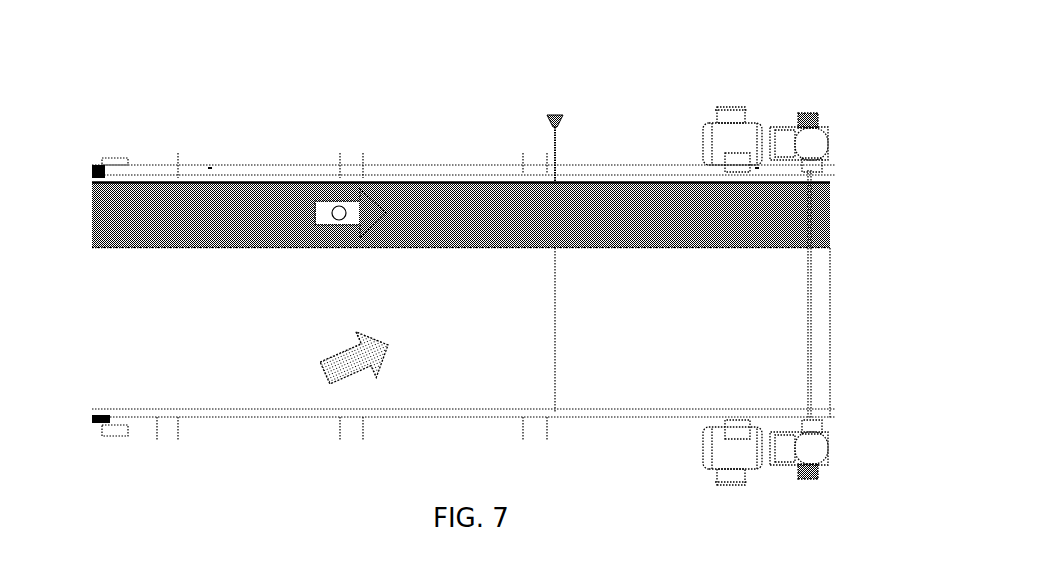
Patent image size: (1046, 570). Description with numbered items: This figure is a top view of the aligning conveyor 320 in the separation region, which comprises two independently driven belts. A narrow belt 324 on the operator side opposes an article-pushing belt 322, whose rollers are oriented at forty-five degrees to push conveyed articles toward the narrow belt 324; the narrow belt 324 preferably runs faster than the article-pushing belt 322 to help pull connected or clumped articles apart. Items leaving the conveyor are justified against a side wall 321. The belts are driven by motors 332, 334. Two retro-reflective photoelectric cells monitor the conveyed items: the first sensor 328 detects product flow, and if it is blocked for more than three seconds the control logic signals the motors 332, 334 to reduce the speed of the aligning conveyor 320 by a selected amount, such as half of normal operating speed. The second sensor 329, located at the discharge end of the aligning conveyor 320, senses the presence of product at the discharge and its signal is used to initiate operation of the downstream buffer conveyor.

The aligning conveyor 320 is at (308, 132).
The side wall 321 is at (603, 170).
The article-pushing belt 322 is at (257, 358).
The narrow belt 324 is at (152, 200).
The first sensor 328 is at (550, 126).
The second sensor 329 is at (826, 86).
The motor 332 is at (703, 458).
The motor 334 is at (715, 122).